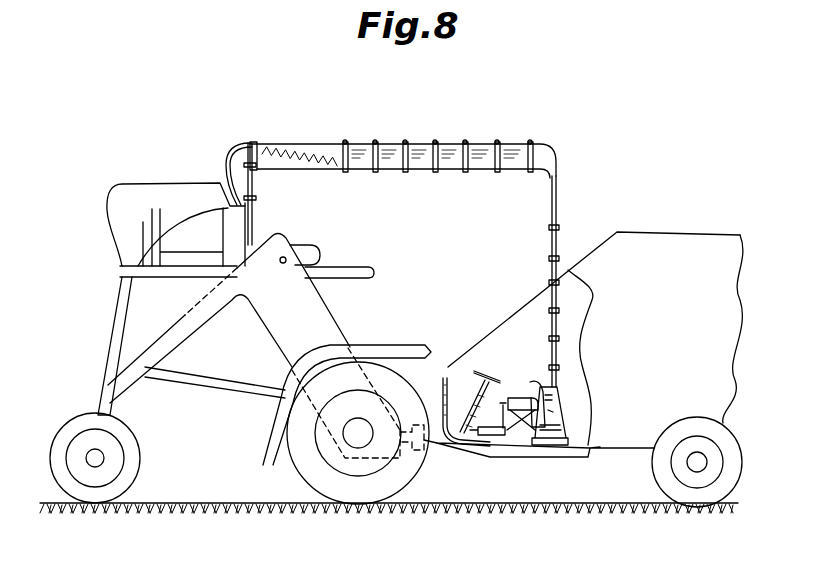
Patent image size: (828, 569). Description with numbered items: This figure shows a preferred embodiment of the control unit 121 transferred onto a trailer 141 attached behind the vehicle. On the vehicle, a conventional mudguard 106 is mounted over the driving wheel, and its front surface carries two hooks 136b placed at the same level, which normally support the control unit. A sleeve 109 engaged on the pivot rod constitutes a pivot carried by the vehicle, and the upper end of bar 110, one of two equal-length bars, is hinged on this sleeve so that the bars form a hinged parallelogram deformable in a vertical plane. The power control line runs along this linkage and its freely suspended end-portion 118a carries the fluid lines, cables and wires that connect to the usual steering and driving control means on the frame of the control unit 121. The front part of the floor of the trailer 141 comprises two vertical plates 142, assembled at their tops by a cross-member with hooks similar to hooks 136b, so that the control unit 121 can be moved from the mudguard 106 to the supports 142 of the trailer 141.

The mudguard 106 is at (397, 347).
The sleeve 109 is at (253, 220).
The bar 110 is at (293, 143).
The end-portion of power control line 118a is at (548, 247).
The control unit 121 is at (506, 379).
The hooks 136b is at (272, 427).
The trailer 141 is at (670, 242).
The vertical plates 142 is at (557, 427).